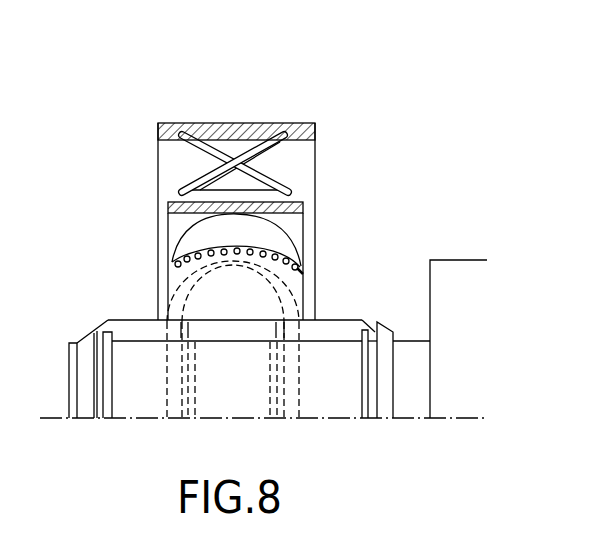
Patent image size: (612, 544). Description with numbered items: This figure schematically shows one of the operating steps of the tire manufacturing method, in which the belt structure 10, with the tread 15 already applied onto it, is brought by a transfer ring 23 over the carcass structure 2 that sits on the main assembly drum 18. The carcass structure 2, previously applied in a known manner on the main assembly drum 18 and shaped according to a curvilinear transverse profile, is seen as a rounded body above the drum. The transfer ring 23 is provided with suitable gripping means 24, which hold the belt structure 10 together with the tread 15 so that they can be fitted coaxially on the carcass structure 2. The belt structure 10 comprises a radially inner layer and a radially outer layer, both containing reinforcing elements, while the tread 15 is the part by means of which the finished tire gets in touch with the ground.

The carcass structure 2 is at (292, 301).
The belt structure 10 is at (299, 277).
The tread 15 is at (277, 236).
The main assembly drum 18 is at (128, 330).
The transfer ring 23 is at (249, 122).
The gripping means 24 is at (303, 203).